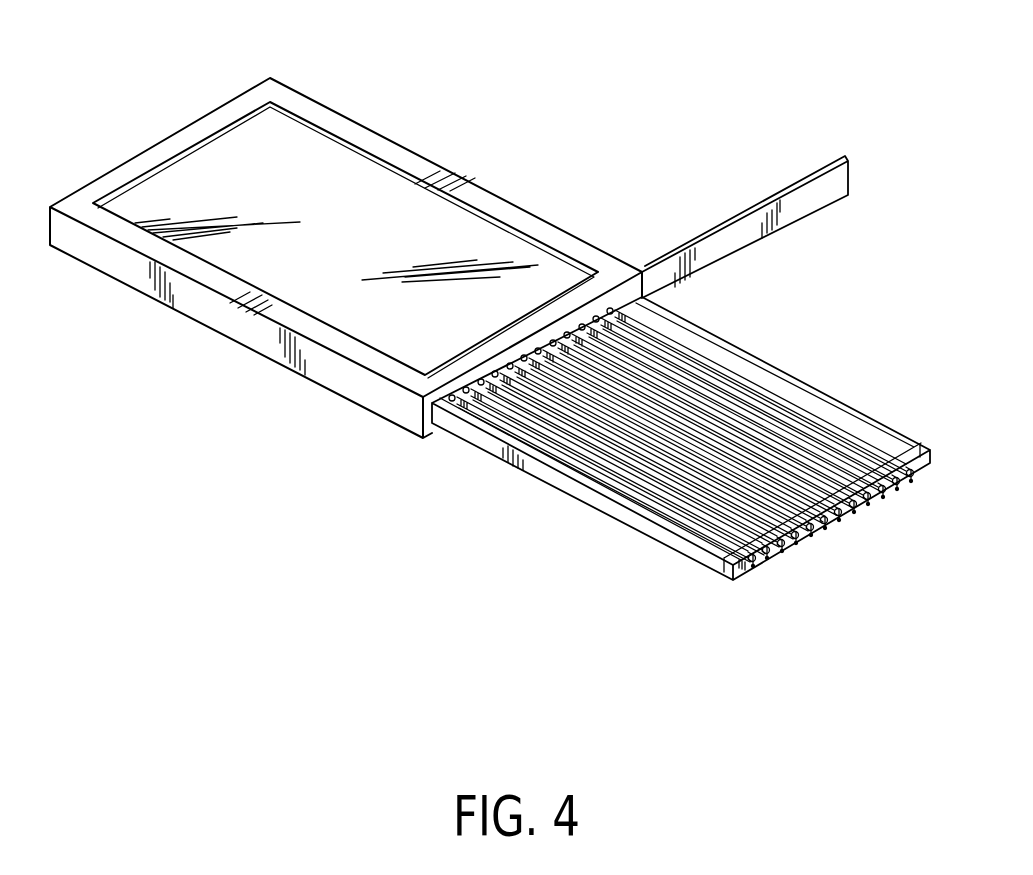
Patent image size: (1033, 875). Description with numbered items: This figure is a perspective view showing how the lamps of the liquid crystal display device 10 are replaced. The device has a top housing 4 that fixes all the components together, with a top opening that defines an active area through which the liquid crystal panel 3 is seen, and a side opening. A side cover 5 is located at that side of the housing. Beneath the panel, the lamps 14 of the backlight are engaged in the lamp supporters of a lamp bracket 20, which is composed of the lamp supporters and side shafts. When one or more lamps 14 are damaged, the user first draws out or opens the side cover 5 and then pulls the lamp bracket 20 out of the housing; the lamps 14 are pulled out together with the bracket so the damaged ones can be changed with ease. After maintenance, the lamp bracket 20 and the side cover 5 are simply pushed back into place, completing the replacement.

The liquid crystal display device 10 is at (346, 219).
The liquid crystal panel 3 is at (193, 160).
The top housing 4 is at (217, 327).
The side cover 5 is at (745, 222).
The lamps 14 is at (660, 355).
The lamp bracket 20 is at (510, 506).